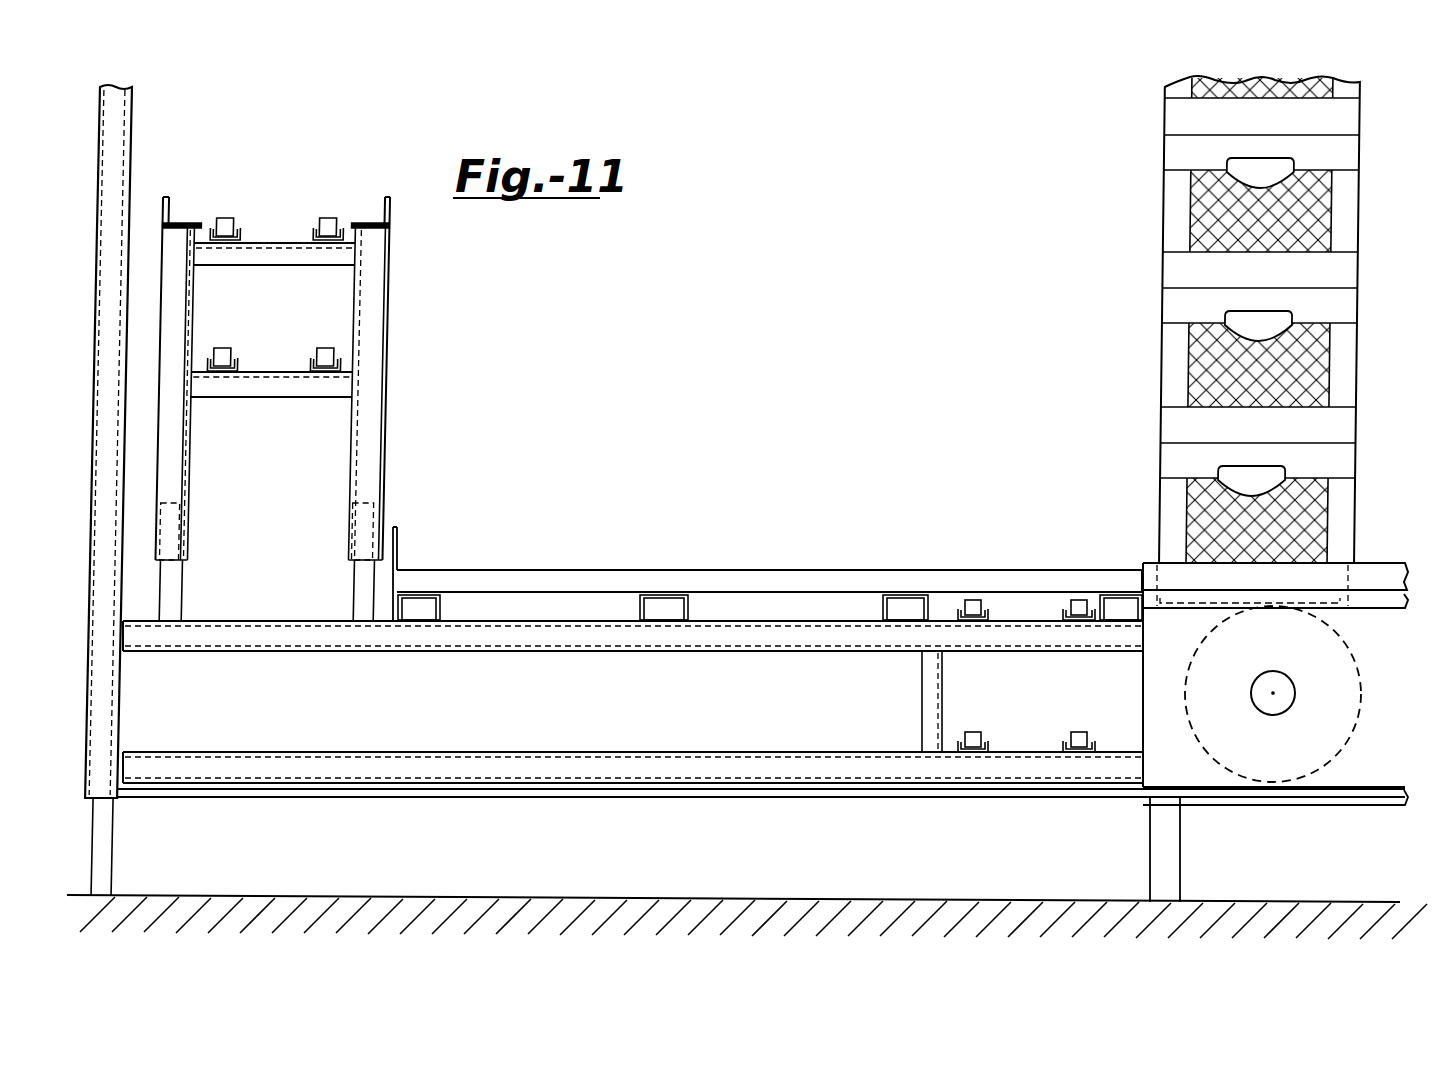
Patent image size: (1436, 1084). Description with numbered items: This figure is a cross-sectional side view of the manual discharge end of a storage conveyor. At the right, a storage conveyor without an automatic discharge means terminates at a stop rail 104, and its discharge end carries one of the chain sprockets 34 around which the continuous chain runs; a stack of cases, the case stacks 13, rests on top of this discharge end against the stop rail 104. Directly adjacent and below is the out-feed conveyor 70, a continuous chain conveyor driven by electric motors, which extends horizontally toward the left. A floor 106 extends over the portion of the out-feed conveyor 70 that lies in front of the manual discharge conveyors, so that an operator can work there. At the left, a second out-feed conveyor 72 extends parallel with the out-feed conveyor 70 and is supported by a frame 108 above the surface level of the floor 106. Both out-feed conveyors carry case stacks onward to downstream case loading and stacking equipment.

The case stacks 13 is at (1162, 268).
The chain sprockets 34 is at (1356, 730).
The out-feed conveyor 70 is at (1016, 604).
The second out-feed conveyor 72 is at (242, 186).
The stop rail 104 is at (1142, 562).
The floor 106 is at (738, 570).
The frame 108 is at (388, 456).